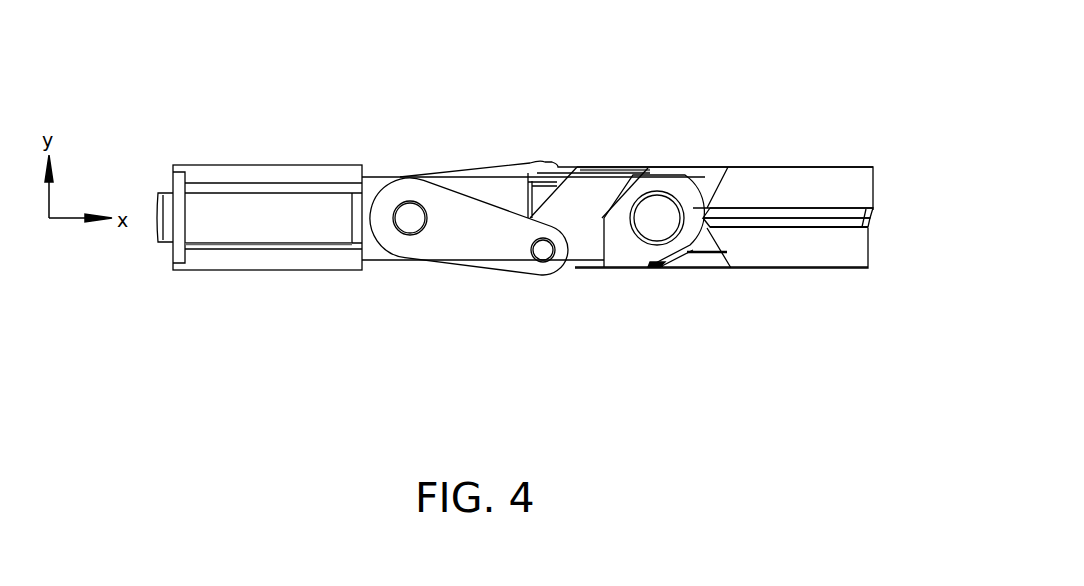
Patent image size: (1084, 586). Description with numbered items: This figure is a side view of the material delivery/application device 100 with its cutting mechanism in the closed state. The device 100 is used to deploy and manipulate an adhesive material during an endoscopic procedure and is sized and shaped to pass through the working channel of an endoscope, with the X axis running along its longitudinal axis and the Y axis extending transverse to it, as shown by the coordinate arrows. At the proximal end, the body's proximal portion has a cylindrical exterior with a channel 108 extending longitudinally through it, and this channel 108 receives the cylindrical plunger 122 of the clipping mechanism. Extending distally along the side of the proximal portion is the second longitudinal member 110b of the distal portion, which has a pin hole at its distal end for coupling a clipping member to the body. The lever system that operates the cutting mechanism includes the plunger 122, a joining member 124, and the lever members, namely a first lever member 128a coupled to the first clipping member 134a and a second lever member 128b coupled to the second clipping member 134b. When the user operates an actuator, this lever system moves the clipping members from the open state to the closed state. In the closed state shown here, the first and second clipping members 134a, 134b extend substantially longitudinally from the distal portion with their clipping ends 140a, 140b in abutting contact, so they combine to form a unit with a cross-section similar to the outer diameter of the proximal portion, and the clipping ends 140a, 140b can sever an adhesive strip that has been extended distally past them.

The material delivery/application device 100 is at (758, 87).
The channel 108 is at (273, 227).
The second longitudinal member 110b is at (462, 250).
The plunger 122 is at (310, 235).
The joining member 124 is at (377, 180).
The first lever member 128a is at (507, 170).
The second lever member 128b is at (515, 250).
The first clipping member 134a is at (763, 250).
The second clipping member 134b is at (743, 183).
The clipping end 140a is at (868, 228).
The clipping end 140b is at (867, 217).